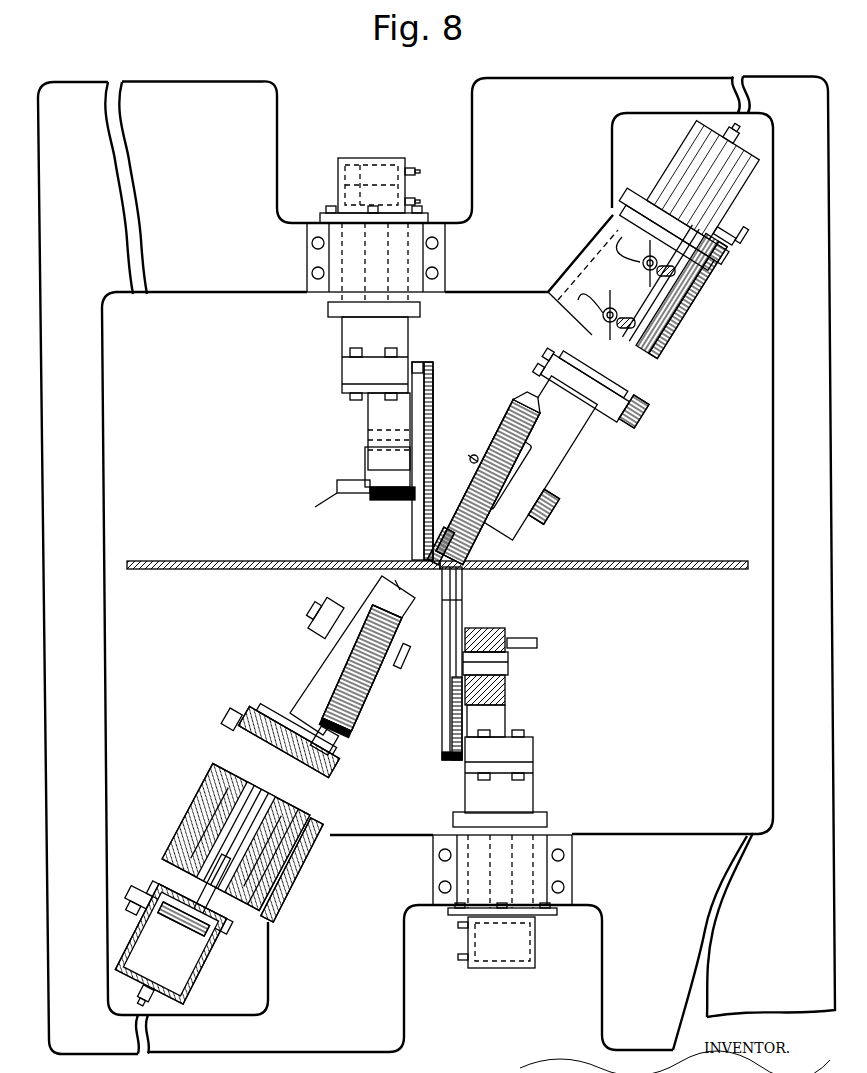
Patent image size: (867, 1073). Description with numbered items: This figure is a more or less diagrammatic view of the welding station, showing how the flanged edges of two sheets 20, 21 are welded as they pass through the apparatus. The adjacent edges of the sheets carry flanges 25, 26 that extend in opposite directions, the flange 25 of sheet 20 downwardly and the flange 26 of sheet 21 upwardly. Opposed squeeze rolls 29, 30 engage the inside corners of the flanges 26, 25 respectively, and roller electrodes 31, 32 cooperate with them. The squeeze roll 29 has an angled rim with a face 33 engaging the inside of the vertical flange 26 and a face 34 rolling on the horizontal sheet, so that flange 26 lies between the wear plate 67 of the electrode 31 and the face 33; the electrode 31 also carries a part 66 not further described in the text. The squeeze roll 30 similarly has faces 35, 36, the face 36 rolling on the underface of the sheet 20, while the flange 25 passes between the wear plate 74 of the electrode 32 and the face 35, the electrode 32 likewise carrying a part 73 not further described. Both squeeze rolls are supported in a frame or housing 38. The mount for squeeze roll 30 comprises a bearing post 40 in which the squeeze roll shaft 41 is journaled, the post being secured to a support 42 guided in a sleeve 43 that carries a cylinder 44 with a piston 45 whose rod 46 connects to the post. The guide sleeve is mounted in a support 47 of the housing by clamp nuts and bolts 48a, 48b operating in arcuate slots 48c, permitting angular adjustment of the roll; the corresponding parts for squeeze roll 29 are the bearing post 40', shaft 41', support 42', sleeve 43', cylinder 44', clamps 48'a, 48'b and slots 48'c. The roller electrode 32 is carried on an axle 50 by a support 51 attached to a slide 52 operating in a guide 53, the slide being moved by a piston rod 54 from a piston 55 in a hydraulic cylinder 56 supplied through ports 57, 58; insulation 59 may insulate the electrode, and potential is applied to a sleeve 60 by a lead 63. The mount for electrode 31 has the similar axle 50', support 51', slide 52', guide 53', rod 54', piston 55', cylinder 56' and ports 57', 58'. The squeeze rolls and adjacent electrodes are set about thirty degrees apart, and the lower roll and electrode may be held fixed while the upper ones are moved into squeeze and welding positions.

The sheet 20 is at (272, 560).
The sheet 21 is at (692, 560).
The flange 25 is at (462, 600).
The flange 26 is at (440, 532).
The squeeze roll 29 is at (488, 481).
The squeeze roll 30 is at (371, 668).
The roller electrode 31 is at (430, 444).
The roller electrode 32 is at (471, 663).
The face 33 is at (528, 394).
The face 34 is at (530, 425).
The face 35 is at (355, 732).
The face 36 is at (395, 580).
The frame or housing 38 is at (528, 191).
The bearing post 40 is at (339, 655).
The bearing post 40' is at (569, 463).
The squeeze roll shaft 41 is at (435, 555).
The squeeze roll shaft 41' is at (588, 275).
The support 42 is at (262, 733).
The support 42' is at (621, 388).
The sleeve 43 is at (232, 835).
The sleeve 43' is at (697, 295).
The cylinder 44 is at (184, 944).
The cylinder 44' is at (696, 191).
The piston 45 is at (210, 958).
The rod 46 is at (165, 876).
The support 47 is at (320, 832).
The clamp nuts and bolts 48a is at (300, 800).
The clamp nuts and bolts 48b is at (265, 912).
The arcuate slots 48c is at (300, 852).
The clamp nuts and bolts 48'a is at (700, 287).
The clamp nuts and bolts 48'b is at (697, 295).
The arcuate slots 48'c is at (599, 279).
The shaft or axle 50 is at (505, 661).
The shaft or axle 50' is at (362, 474).
The support 51 is at (517, 718).
The support 51' is at (361, 431).
The slide 52 is at (533, 775).
The slide 52' is at (355, 358).
The guide 53 is at (524, 851).
The guide 53' is at (362, 270).
The piston rod 54 is at (522, 917).
The piston rod 54' is at (387, 204).
The piston 55 is at (530, 942).
The piston 55' is at (341, 185).
The hydraulic cylinder 56 is at (500, 957).
The hydraulic cylinder 56' is at (343, 179).
The port 57 is at (288, 900).
The port 57' is at (610, 194).
The port 58 is at (301, 998).
The port 58' is at (606, 142).
The insulation 59 is at (505, 638).
The sleeve 60 is at (505, 635).
The lead 63 is at (537, 643).
The hub 66 is at (430, 362).
The wear plate 67 is at (433, 381).
The gear hub 73 is at (462, 609).
The wear plate 74 is at (442, 721).